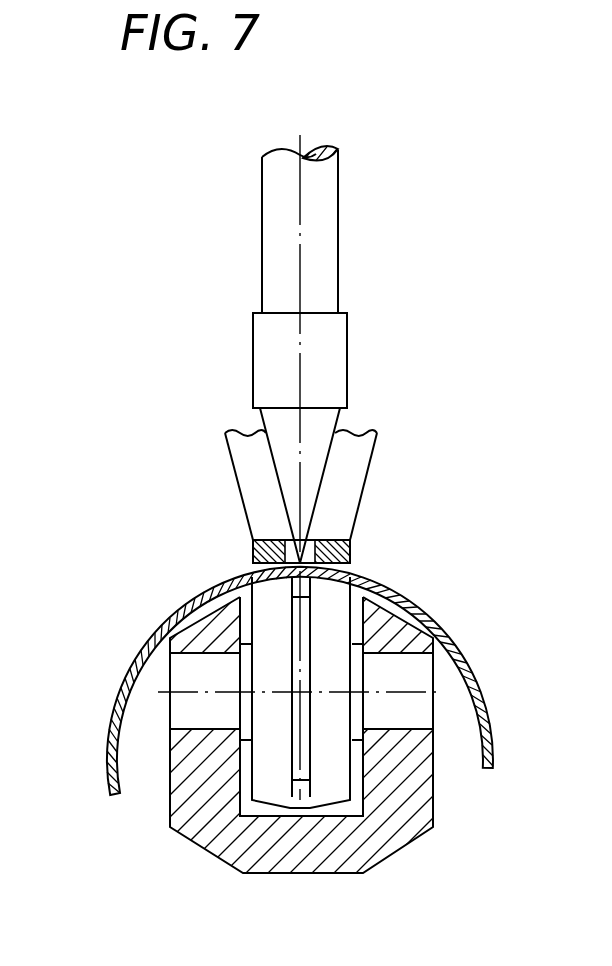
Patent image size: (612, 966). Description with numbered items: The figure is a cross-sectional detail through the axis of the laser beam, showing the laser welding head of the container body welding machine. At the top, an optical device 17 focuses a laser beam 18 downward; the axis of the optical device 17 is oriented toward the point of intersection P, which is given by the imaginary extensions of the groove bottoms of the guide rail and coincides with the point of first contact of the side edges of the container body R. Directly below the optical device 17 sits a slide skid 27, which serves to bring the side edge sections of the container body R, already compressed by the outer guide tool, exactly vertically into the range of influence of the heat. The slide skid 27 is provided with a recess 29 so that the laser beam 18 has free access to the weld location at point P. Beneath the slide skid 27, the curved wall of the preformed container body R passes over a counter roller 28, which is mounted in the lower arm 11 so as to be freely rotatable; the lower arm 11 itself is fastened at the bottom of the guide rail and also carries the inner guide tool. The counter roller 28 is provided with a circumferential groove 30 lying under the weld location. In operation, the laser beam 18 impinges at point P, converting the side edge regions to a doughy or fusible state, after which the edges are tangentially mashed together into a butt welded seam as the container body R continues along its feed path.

The optical device 17 is at (333, 352).
The laser beam 18 is at (315, 460).
The slide skid 27 is at (348, 552).
The recess 29 is at (283, 538).
The point of intersection P is at (300, 570).
The container body R is at (112, 732).
The counter roller 28 is at (335, 708).
The lower arm 11 is at (407, 787).
The circumferential groove 30 is at (297, 790).